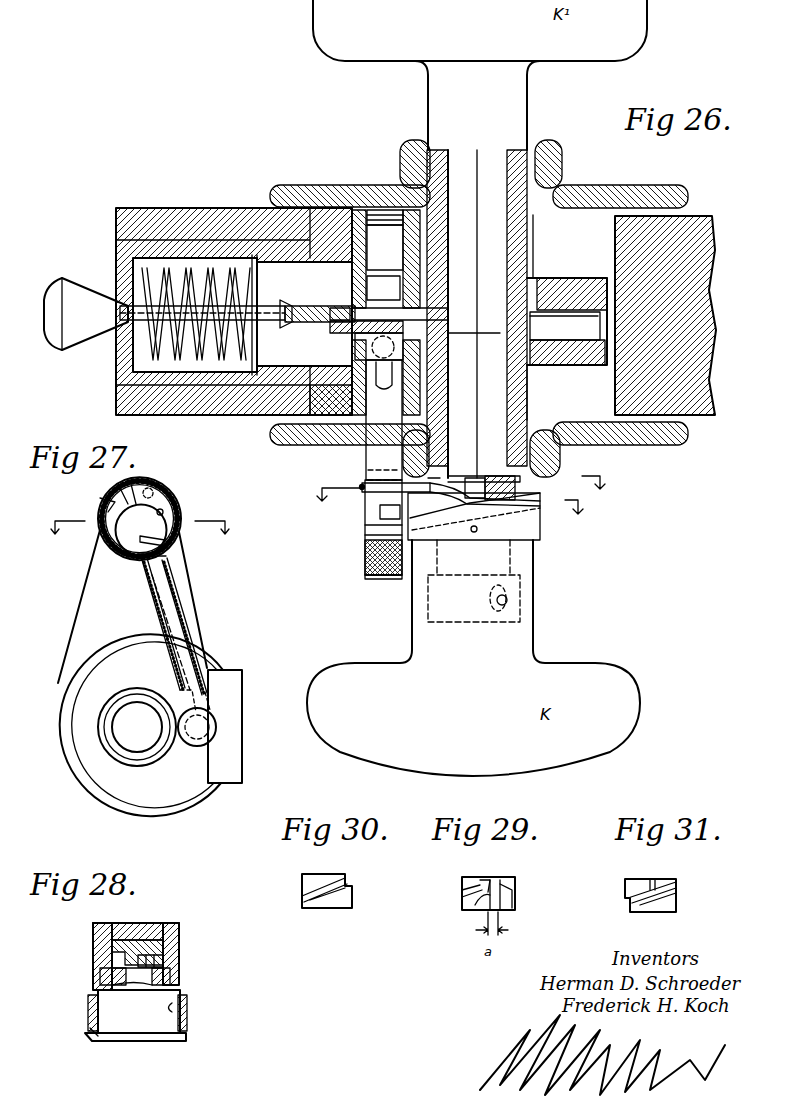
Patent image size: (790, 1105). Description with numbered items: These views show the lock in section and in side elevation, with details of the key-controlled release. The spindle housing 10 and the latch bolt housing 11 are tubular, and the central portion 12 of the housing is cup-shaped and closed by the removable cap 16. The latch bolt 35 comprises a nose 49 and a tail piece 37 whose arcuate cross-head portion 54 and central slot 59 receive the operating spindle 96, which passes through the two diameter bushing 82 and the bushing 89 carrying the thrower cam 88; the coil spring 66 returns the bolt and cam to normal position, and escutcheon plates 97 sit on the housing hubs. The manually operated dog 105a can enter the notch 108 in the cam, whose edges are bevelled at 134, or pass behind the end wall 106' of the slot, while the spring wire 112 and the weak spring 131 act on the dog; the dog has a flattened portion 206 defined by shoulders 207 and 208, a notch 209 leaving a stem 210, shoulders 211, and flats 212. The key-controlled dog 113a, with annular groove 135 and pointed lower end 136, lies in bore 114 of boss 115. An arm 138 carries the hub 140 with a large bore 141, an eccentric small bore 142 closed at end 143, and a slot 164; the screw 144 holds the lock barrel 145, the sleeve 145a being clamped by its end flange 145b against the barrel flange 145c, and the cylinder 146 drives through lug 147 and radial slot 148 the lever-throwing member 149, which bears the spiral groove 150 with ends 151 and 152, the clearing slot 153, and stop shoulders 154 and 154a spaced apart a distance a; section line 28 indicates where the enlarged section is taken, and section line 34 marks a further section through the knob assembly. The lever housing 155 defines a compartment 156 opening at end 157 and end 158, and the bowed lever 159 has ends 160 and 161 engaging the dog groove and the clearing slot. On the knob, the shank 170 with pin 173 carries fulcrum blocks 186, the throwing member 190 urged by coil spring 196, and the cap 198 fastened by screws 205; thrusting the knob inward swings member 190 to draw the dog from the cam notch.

In FIG. 26, the spindle housing 10 is at (542, 276).
In FIG. 27, the spindle housing 10 is at (70, 785).
In FIG. 26, the latch bolt housing 11 is at (215, 375).
In FIG. 26, the central portion of housing 12 is at (572, 290).
In FIG. 26, the cap 16 is at (580, 362).
In FIG. 27, the section line 28 is at (143, 519).
In FIG. 26, the section line 34 is at (511, 474).
In FIG. 26, the latch bolt 35 is at (447, 492).
In FIG. 26, the tail piece 37 is at (305, 304).
In FIG. 26, the nose 49 is at (96, 312).
In FIG. 26, the arcuate cross-head portion 54 is at (560, 322).
In FIG. 26, the central slot 59 is at (432, 315).
In FIG. 26, the coil spring 66 is at (128, 362).
In FIG. 26, the two diameter bushing 82 is at (440, 275).
In FIG. 26, the thrower cam 88 is at (535, 328).
In FIG. 26, the bushing 89 is at (522, 378).
In FIG. 26, the operating spindle 96 is at (530, 412).
In FIG. 26, the escutcheon plates 97 is at (640, 190).
In FIG. 26, the manually operated dog 105a is at (382, 578).
In FIG. 26, the end wall of slot 106' is at (384, 310).
In FIG. 26, the notch 108 is at (375, 333).
In FIG. 26, the spring wire 112 is at (360, 360).
In FIG. 26, the key-controlled dog 113a is at (378, 235).
In FIG. 26, the bore 114 is at (438, 238).
In FIG. 27, the boss 115 is at (183, 740).
In FIG. 26, the spring 131 is at (392, 205).
In FIG. 26, the bevelled edges 134 is at (440, 336).
In FIG. 26, the annular groove 135 is at (382, 270).
In FIG. 26, the pointed lower end 136 is at (384, 300).
In FIG. 27, the arm 138 is at (100, 612).
In FIG. 27, the hub 140 is at (175, 500).
In FIG. 28, the hub 140 is at (179, 966).
In FIG. 27, the relatively large bore 141 is at (98, 500).
In FIG. 28, the relatively large bore 141 is at (187, 1006).
In FIG. 27, the relatively small bore 142 is at (163, 513).
In FIG. 28, the closed end 143 is at (148, 930).
In FIG. 27, the screw 144 is at (165, 482).
In FIG. 28, the lock barrel 145 is at (139, 1011).
In FIG. 28, the sleeve 145a is at (88, 1015).
In FIG. 28, the end flange 145b is at (90, 1037).
In FIG. 28, the flange of barrel 145c is at (132, 1042).
In FIG. 28, the cylinder 146 is at (125, 980).
In FIG. 28, the driving lug 147 is at (163, 960).
In FIG. 27, the radially extending slot 148 is at (168, 542).
In FIG. 27, the lever-throwing member 149 is at (130, 520).
In FIG. 28, the lever-throwing member 149 is at (128, 938).
In FIG. 30, the lever-throwing member 149 is at (302, 880).
In FIG. 29, the lever-throwing member 149 is at (462, 882).
In FIG. 31, the lever-throwing member 149 is at (625, 886).
In FIG. 28, the spiral groove 150 is at (179, 932).
In FIG. 30, the spiral groove 150 is at (318, 902).
In FIG. 29, the spiral groove 150 is at (465, 893).
In FIG. 31, the spiral groove 150 is at (676, 890).
In FIG. 29, the groove end 151 is at (482, 878).
In FIG. 29, the groove end 152 is at (513, 905).
In FIG. 29, the clearing slot 153 is at (493, 880).
In FIG. 29, the defining edge 154 is at (478, 904).
In FIG. 29, the defining edge 154a is at (502, 882).
In FIG. 27, the lever housing 155 is at (190, 638).
In FIG. 27, the compartment 156 is at (178, 622).
In FIG. 27, the opening 157 is at (208, 710).
In FIG. 27, the opening 158 is at (142, 560).
In FIG. 27, the lever 159 is at (158, 618).
In FIG. 27, the lever end 160 is at (217, 719).
In FIG. 27, the lever end 161 is at (165, 556).
In FIG. 27, the slot 164 is at (122, 484).
In FIG. 26, the knob shank 170 is at (522, 580).
In FIG. 26, the set screw or pin 173 is at (507, 600).
In FIG. 26, the fulcrum blocks 186 is at (478, 480).
In FIG. 26, the throwing member or lever 190 is at (362, 486).
In FIG. 26, the coil spring 196 is at (440, 510).
In FIG. 26, the cap 198 is at (540, 522).
In FIG. 26, the screws 205 is at (478, 528).
In FIG. 26, the flattened portion 206 is at (365, 534).
In FIG. 26, the shoulder 207 is at (368, 482).
In FIG. 26, the shoulder 208 is at (368, 545).
In FIG. 26, the notch 209 is at (378, 510).
In FIG. 26, the stem 210 is at (365, 525).
In FIG. 26, the shoulders 211 is at (395, 472).
In FIG. 26, the flats 212 is at (385, 386).